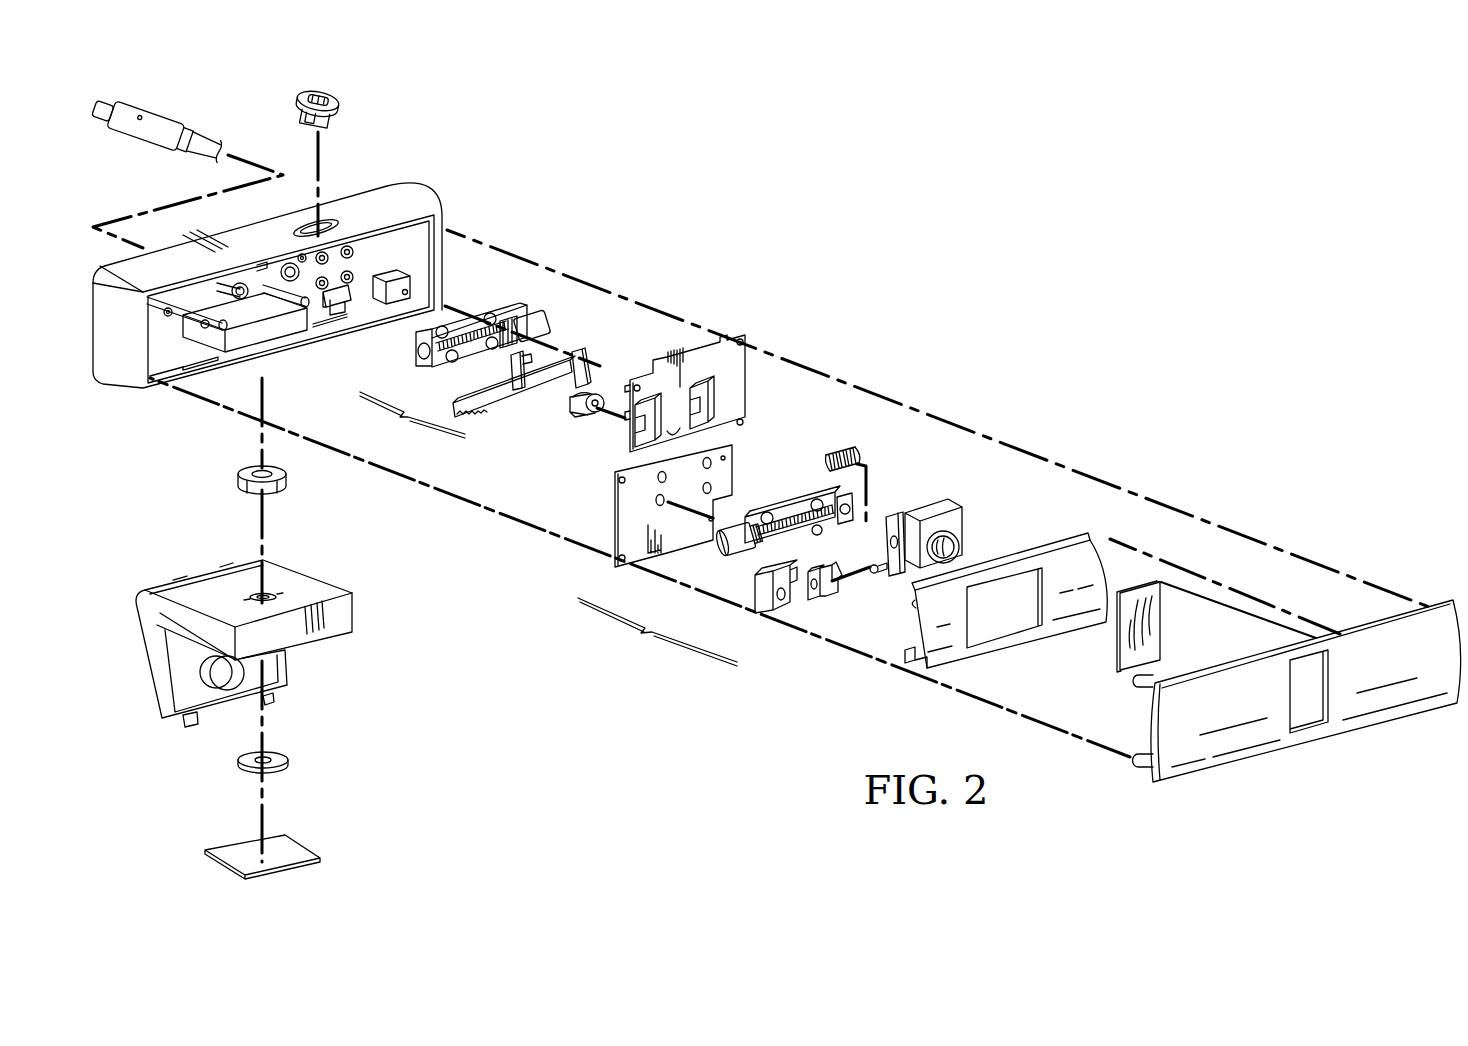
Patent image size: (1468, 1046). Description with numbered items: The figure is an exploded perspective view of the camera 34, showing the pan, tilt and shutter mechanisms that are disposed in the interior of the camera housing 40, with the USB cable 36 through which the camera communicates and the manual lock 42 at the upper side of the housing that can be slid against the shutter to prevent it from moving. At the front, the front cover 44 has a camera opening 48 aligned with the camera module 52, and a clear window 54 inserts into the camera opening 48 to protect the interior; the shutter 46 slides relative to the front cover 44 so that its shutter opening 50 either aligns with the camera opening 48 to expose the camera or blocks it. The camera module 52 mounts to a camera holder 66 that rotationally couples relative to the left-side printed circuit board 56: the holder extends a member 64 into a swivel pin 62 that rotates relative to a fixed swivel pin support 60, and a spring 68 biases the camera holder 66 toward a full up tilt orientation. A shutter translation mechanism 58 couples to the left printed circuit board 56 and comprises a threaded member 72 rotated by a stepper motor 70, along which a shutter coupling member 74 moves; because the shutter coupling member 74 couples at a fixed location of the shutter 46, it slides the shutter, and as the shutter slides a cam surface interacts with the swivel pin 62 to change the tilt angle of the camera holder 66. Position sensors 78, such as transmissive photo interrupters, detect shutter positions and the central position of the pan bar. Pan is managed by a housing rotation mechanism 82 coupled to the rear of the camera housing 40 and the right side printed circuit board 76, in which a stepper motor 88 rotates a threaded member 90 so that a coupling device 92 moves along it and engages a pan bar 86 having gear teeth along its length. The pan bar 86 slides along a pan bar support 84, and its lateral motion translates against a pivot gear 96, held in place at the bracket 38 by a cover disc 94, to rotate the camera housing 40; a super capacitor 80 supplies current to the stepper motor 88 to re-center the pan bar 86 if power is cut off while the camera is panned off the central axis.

The camera 34 is at (926, 265).
The USB cable 36 is at (133, 139).
The bracket 38 is at (310, 586).
The camera housing 40 is at (413, 194).
The manual lock 42 is at (333, 98).
The front cover 44 is at (1297, 711).
The shutter 46 is at (1006, 577).
The camera opening 48 is at (1320, 658).
The shutter opening 50 is at (984, 584).
The camera module 52 is at (938, 549).
The clear window 54 is at (1116, 660).
The left-side printed circuit board 56 is at (613, 502).
The shutter translation mechanism 58 is at (657, 635).
The swivel pin support 60 is at (767, 600).
The swivel pin 62 is at (827, 603).
The member 64 is at (876, 578).
The camera holder 66 is at (896, 514).
The spring 68 is at (850, 452).
The stepper motor 70 is at (720, 541).
The threaded member 72 is at (788, 540).
The shutter coupling member 74 is at (740, 528).
The right side printed circuit board 76 is at (699, 363).
The position sensors 78 is at (626, 390).
The super capacitor 80 is at (668, 352).
The housing rotation mechanism 82 is at (412, 423).
The pan bar support 84 is at (574, 417).
The pan bar 86 is at (503, 405).
The stepper motor 88 is at (542, 326).
The threaded member 90 is at (453, 362).
The coupling device 92 is at (514, 334).
The cover disc 94 is at (251, 773).
The pivot gear 96 is at (238, 477).